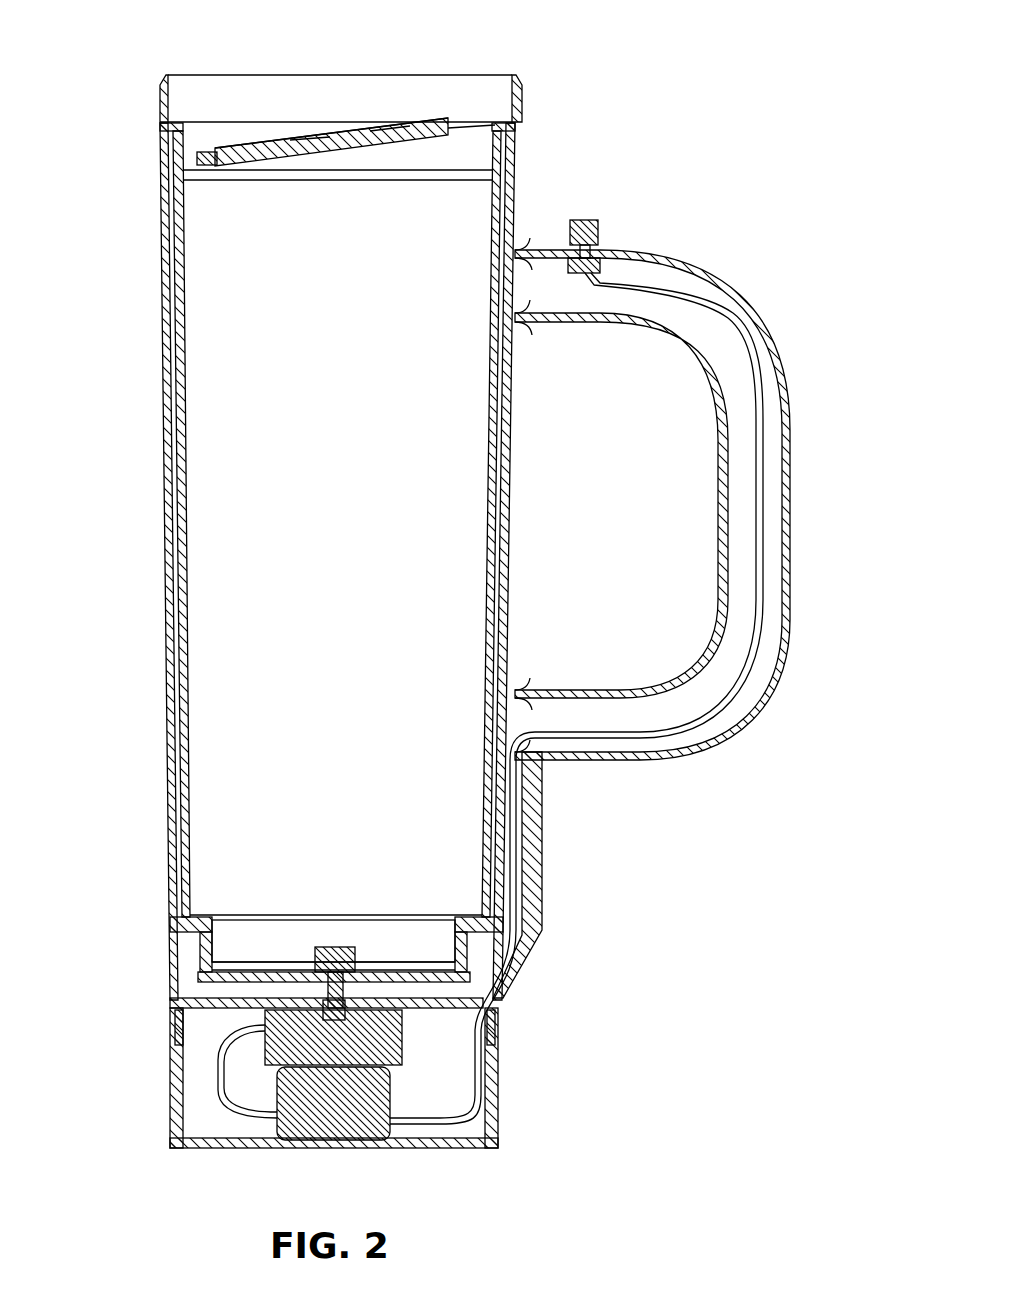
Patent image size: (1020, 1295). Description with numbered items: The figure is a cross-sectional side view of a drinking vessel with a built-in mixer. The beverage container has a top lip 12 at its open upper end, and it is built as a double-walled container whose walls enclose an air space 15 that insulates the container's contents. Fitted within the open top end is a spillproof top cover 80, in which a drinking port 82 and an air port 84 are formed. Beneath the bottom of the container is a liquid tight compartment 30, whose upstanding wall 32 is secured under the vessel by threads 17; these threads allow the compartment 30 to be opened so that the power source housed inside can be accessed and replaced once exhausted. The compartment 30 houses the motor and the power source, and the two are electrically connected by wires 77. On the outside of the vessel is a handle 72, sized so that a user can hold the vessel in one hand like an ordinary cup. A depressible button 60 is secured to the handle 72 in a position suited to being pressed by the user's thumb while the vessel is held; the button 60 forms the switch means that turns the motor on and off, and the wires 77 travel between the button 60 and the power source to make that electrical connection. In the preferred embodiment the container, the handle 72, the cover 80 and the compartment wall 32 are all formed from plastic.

The top lip 12 is at (517, 136).
The air space 15 is at (170, 436).
The threads 17 is at (498, 1030).
The liquid tight compartment 30 is at (470, 1125).
The upstanding wall 32 is at (172, 1098).
The depressible button 60 is at (600, 222).
The handle 72 is at (792, 436).
The wires 77 is at (757, 500).
The top cover 80 is at (520, 92).
The drinking port 82 is at (201, 152).
The air port 84 is at (407, 136).